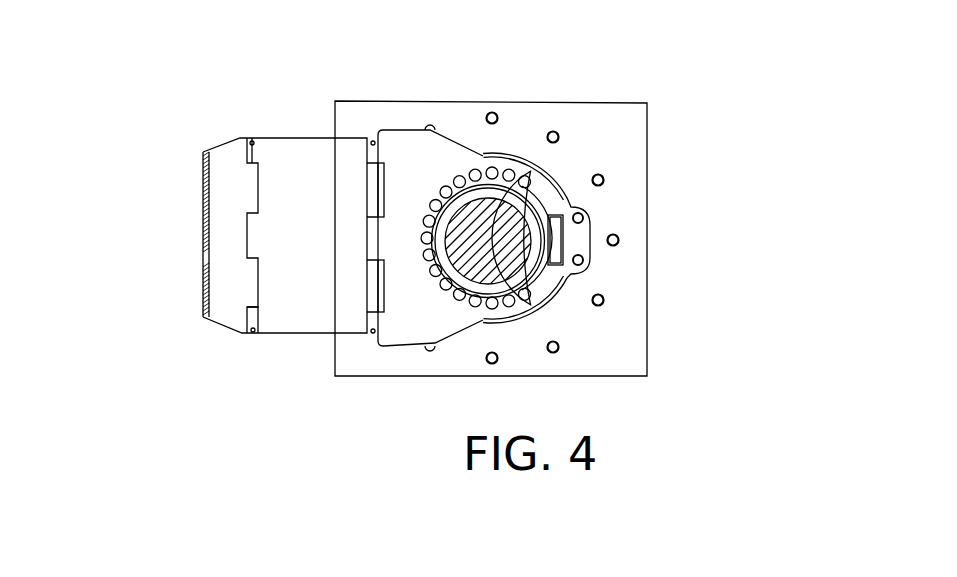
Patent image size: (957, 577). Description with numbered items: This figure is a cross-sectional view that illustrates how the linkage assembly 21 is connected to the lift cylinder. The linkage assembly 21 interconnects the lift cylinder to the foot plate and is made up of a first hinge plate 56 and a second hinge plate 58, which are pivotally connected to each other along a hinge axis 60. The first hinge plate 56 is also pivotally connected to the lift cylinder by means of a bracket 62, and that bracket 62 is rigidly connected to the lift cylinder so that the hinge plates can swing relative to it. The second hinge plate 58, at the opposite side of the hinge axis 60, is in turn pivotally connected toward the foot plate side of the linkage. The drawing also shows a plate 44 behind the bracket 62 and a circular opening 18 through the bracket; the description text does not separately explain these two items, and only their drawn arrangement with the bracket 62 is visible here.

The rotor shaft / bore 18 is at (507, 218).
The linkage assembly 21 is at (147, 280).
The mounting plate 44 is at (588, 118).
The first hinge plate 56 is at (303, 153).
The second hinge plate 58 is at (227, 172).
The hinge axis 60 is at (252, 327).
The bracket 62 is at (418, 152).